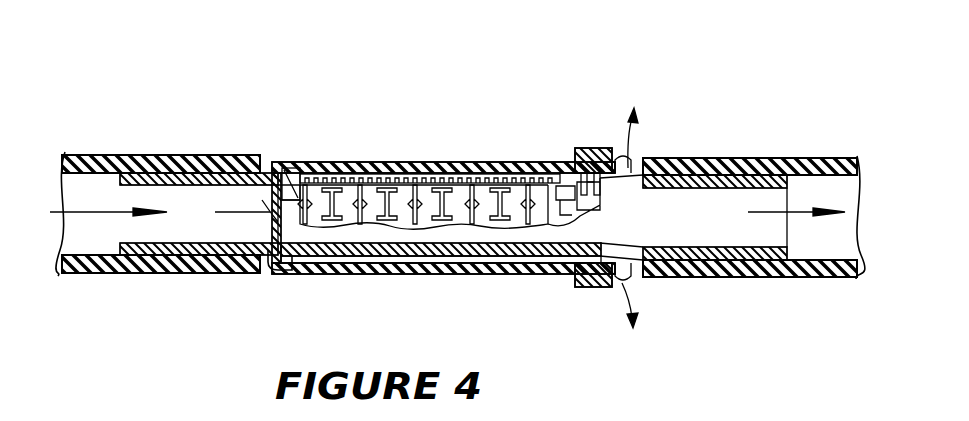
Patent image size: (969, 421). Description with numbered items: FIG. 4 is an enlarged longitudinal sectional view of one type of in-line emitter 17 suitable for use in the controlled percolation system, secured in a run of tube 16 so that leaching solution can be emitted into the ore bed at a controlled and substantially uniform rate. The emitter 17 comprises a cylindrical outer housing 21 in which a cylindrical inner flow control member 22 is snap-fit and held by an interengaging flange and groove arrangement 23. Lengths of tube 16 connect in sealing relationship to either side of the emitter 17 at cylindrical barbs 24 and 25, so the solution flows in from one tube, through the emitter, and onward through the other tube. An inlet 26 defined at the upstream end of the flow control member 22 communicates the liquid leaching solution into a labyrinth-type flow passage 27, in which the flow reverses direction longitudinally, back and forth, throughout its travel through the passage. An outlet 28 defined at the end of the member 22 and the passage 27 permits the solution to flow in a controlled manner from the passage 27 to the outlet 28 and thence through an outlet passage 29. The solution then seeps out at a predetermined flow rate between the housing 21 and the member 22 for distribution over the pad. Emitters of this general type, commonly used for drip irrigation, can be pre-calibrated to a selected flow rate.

The tube 16 is at (170, 157).
The emitter 17 is at (452, 179).
The outer housing 21 is at (420, 162).
The inner flow control member 22 is at (280, 265).
The interengaging flange and groove arrangement 23 is at (568, 283).
The cylindrical barb 24 is at (709, 286).
The cylindrical barb 25 is at (210, 276).
The inlet 26 is at (303, 165).
The labyrinth-type flow passage 27 is at (374, 166).
The outlet 28 is at (552, 166).
The outlet passage 29 is at (597, 166).